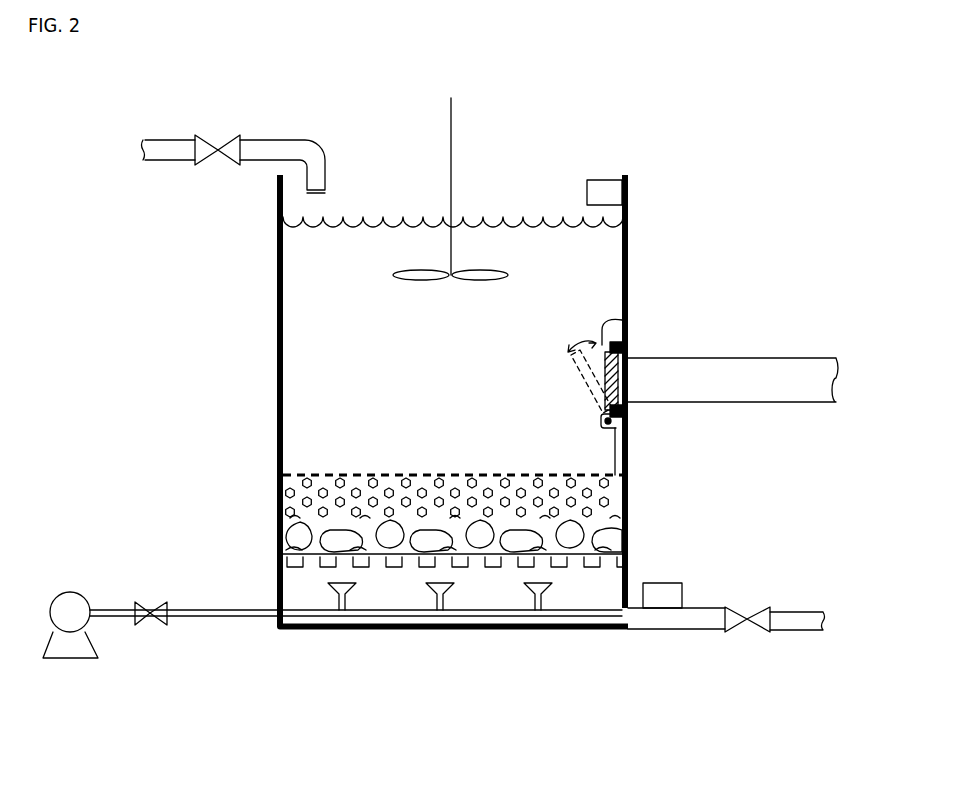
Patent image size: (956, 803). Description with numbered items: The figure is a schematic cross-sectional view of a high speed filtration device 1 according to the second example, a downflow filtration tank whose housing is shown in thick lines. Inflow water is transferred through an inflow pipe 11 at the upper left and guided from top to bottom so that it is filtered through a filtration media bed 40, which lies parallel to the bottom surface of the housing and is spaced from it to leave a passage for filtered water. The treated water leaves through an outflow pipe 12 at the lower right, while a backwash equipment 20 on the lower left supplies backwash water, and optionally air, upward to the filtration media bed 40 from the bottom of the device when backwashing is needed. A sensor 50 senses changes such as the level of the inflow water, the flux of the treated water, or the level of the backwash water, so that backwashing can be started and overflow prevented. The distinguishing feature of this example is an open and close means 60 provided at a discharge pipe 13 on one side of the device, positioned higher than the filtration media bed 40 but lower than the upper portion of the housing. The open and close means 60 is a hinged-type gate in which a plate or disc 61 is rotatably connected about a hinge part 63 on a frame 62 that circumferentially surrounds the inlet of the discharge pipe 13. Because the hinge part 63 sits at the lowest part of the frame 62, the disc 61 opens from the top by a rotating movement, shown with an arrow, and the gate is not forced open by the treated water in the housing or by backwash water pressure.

The high speed filtration device 1 is at (620, 113).
The inflow pipe 11 is at (263, 149).
The outflow pipe 12 is at (693, 620).
The discharge pipe 13 is at (808, 373).
The backwash equipment 20 is at (220, 610).
The filtration media bed 40 is at (307, 497).
The sensor 50 is at (612, 191).
The open and close means 60 is at (650, 349).
The plate or disc 61 is at (626, 318).
The frame 62 is at (625, 347).
The hinge part 63 is at (615, 418).